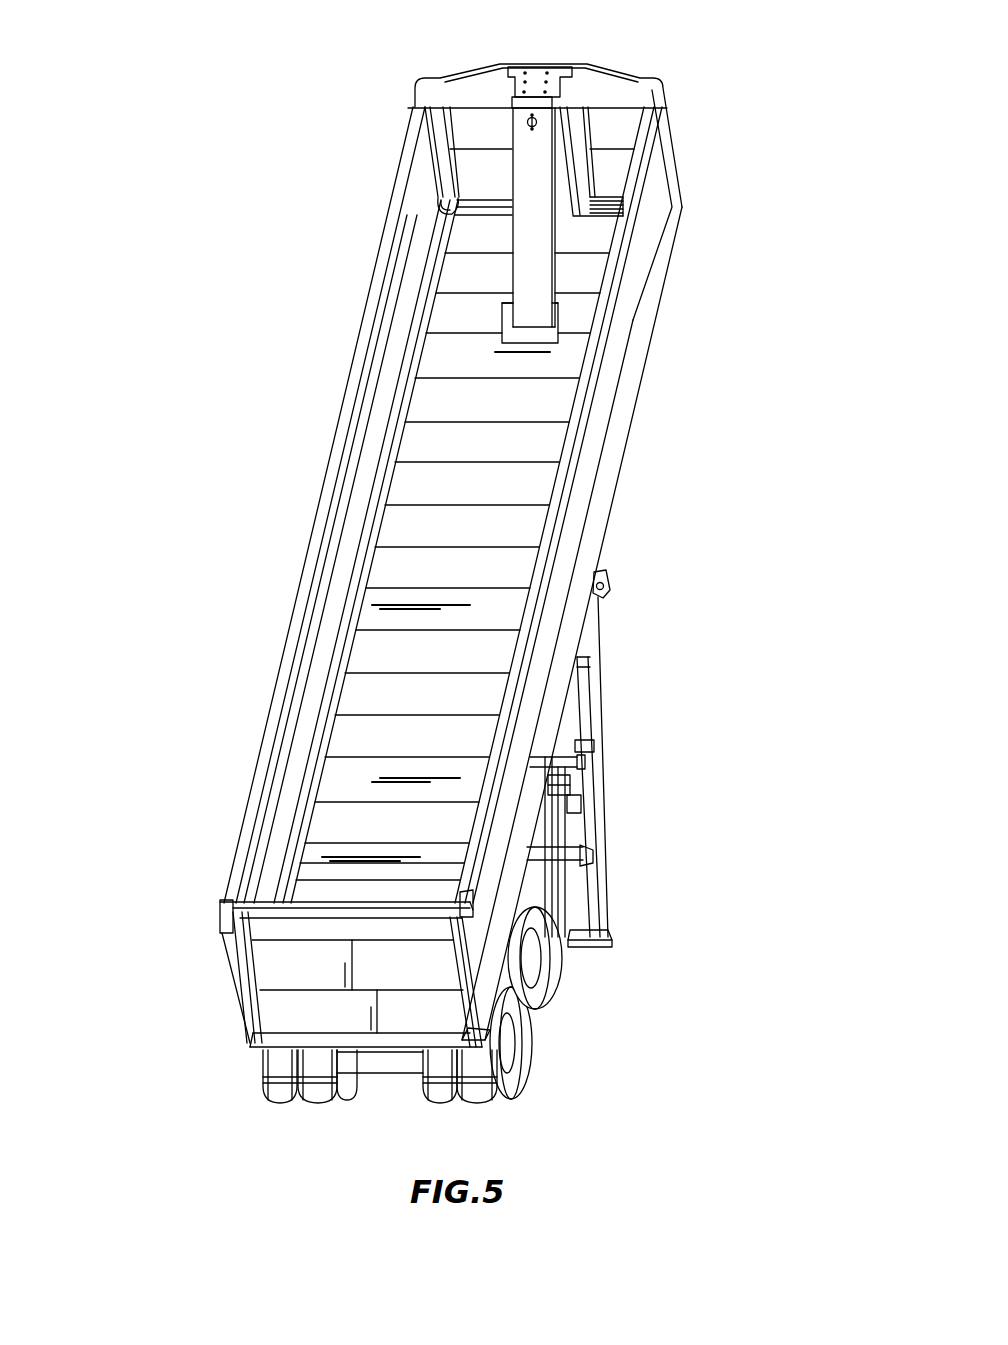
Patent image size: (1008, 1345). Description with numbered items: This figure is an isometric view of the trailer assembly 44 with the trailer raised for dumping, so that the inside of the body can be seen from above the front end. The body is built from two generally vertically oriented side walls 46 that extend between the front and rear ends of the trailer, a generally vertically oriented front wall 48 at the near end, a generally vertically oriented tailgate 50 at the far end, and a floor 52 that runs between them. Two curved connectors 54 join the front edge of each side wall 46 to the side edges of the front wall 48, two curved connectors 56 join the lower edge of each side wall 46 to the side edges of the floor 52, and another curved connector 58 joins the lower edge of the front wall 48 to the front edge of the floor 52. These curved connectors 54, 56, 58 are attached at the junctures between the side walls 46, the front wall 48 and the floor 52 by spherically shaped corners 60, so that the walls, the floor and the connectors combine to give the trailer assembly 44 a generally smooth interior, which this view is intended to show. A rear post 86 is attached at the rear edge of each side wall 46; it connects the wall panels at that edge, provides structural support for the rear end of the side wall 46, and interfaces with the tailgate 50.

The trailer assembly 44 is at (446, 566).
The side walls 46 is at (313, 515).
The front wall 48 is at (612, 138).
The tailgate 50 is at (233, 990).
The floor 52 is at (520, 483).
The curved connectors 54 is at (442, 150).
The curved connectors 56 is at (337, 668).
The curved connector 58 is at (613, 207).
The spherically shaped corners 60 is at (445, 207).
The rear post 86 is at (490, 938).